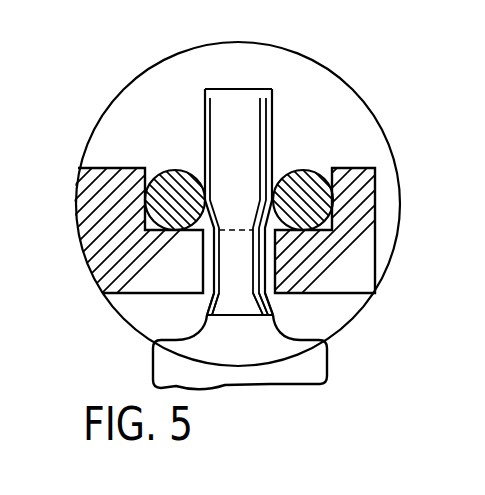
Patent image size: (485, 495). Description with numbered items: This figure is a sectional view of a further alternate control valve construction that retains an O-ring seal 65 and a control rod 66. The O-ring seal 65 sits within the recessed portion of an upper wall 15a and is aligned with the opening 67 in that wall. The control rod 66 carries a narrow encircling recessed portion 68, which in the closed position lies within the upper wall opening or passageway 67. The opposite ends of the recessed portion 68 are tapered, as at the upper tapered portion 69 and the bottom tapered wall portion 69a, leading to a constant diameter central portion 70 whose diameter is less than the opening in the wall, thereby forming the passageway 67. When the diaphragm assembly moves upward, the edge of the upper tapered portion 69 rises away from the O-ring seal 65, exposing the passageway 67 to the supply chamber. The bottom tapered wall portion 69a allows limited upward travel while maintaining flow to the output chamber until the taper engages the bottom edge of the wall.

The upper wall 15a is at (353, 222).
The O-ring seal 65 is at (282, 173).
The control rod 66 is at (222, 123).
The upper tapered portion 69 is at (250, 215).
The constant diameter central portion 70 is at (250, 250).
The opening or passageway 67 is at (258, 276).
The bottom tapered wall portion 69a is at (233, 308).
The recessed portion 68 is at (224, 266).